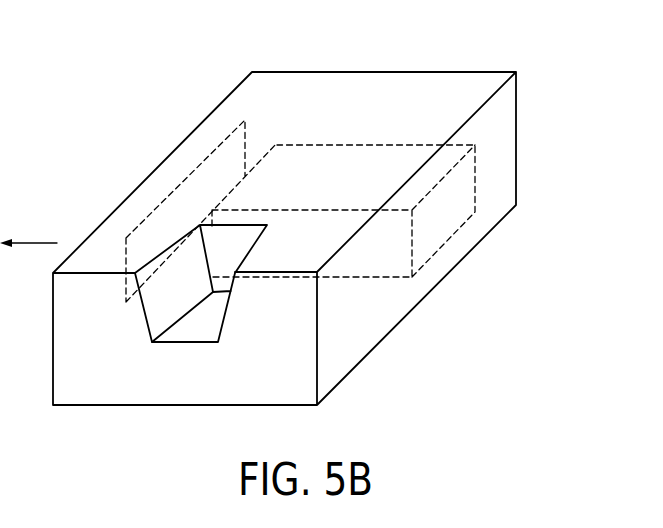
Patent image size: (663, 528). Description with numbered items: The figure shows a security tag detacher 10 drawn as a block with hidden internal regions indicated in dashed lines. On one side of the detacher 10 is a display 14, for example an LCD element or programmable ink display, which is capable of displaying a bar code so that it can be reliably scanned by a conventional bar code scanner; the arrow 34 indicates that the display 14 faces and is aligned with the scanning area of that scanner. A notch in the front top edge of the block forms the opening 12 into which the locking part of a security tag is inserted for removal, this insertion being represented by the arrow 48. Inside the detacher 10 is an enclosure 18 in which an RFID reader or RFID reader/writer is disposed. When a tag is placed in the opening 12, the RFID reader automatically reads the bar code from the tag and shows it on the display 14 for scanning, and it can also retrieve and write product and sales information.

The tag detacher 10 is at (366, 66).
The opening 12 is at (160, 298).
The display 14 is at (187, 162).
The enclosure 18 is at (322, 143).
The arrow 34 is at (28, 243).
The arrow 48 is at (199, 326).